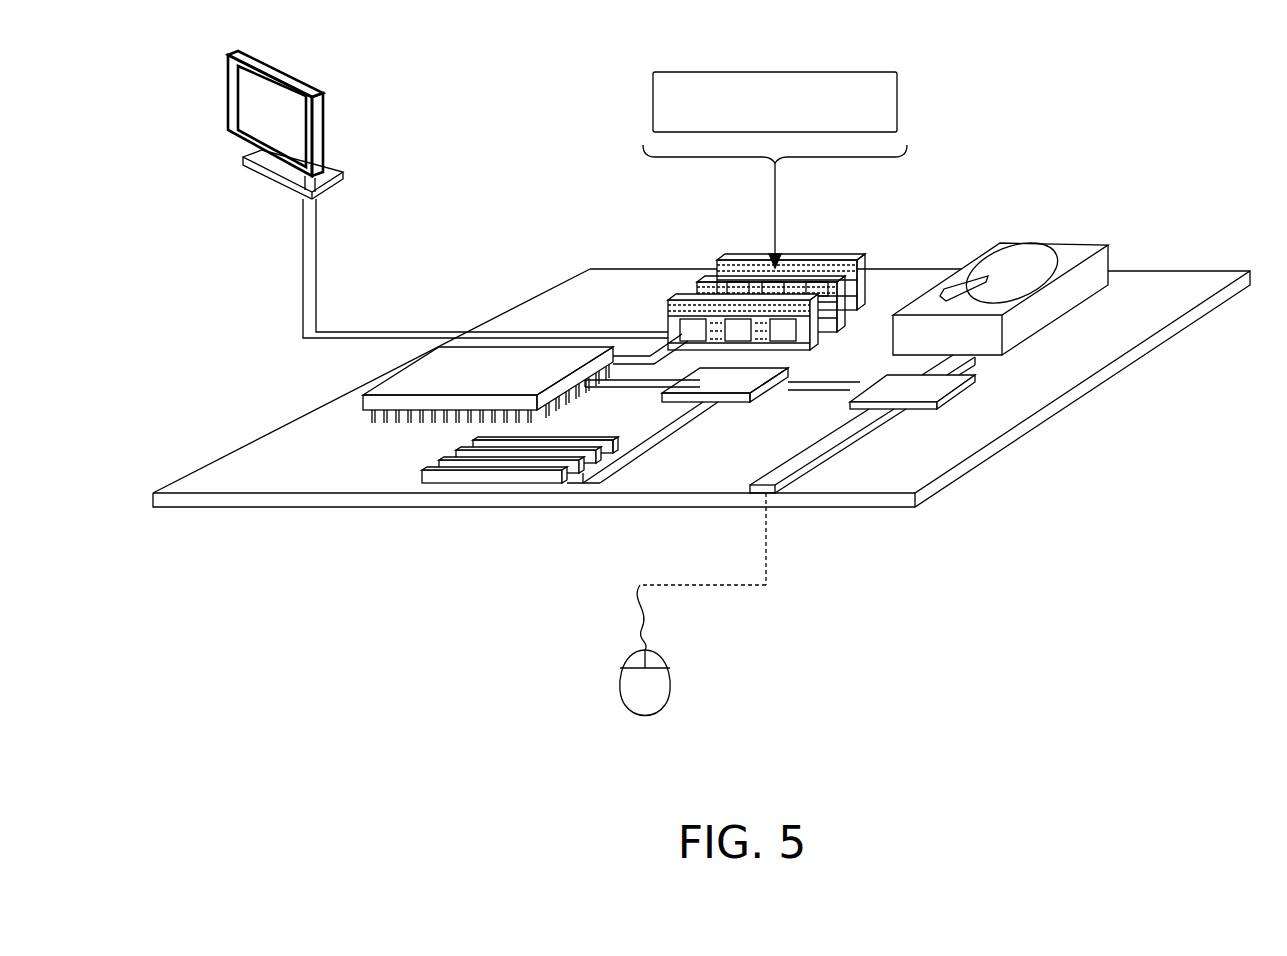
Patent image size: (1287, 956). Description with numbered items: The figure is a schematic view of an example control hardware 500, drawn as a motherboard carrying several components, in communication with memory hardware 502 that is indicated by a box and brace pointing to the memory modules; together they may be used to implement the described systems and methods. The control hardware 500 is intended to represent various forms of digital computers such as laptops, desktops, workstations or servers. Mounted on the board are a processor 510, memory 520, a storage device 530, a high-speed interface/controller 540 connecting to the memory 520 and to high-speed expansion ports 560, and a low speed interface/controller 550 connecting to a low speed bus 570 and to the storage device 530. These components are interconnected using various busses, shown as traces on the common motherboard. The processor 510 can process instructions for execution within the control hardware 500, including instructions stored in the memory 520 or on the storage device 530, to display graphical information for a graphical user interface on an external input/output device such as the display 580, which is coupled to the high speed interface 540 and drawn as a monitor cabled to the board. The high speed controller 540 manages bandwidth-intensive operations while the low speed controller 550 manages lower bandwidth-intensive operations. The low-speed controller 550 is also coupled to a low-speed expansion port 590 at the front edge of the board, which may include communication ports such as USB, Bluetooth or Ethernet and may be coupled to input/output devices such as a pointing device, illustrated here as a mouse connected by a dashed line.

The control hardware 500 is at (969, 116).
The memory hardware 502 is at (776, 72).
The processor 510 is at (363, 398).
The memory 520 is at (668, 302).
The storage device 530 is at (1050, 243).
The high-speed interface/controller 540 is at (730, 402).
The low speed interface/controller 550 is at (905, 380).
The high-speed expansion ports 560 is at (422, 474).
The low speed bus 570 is at (845, 452).
The display 580 is at (228, 98).
The low-speed expansion port 590 is at (780, 496).